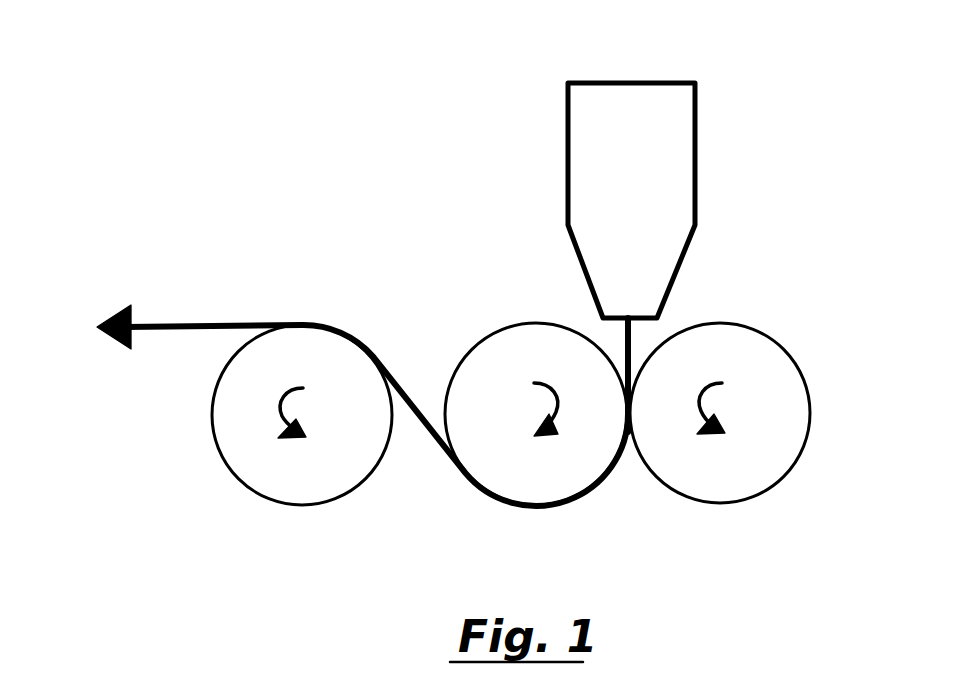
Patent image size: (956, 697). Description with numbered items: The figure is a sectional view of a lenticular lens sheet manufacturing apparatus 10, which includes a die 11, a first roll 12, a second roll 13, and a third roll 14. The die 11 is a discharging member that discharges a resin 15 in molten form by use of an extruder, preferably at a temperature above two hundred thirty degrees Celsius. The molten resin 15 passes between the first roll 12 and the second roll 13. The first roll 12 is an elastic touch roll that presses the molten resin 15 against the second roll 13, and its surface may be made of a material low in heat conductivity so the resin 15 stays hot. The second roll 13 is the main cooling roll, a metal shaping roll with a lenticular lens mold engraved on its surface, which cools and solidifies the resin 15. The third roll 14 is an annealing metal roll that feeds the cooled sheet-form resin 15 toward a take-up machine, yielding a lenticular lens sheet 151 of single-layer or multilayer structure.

The lenticular lens sheet manufacturing apparatus 10 is at (757, 172).
The die 11 is at (619, 113).
The first roll 12 is at (727, 483).
The second roll 13 is at (560, 473).
The third roll 14 is at (292, 358).
The resin 15 is at (418, 364).
The lenticular lens sheet 151 is at (197, 330).